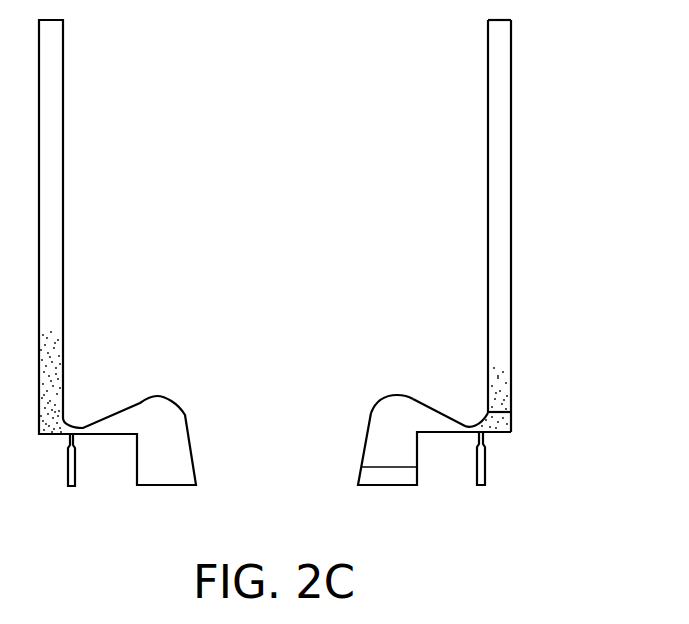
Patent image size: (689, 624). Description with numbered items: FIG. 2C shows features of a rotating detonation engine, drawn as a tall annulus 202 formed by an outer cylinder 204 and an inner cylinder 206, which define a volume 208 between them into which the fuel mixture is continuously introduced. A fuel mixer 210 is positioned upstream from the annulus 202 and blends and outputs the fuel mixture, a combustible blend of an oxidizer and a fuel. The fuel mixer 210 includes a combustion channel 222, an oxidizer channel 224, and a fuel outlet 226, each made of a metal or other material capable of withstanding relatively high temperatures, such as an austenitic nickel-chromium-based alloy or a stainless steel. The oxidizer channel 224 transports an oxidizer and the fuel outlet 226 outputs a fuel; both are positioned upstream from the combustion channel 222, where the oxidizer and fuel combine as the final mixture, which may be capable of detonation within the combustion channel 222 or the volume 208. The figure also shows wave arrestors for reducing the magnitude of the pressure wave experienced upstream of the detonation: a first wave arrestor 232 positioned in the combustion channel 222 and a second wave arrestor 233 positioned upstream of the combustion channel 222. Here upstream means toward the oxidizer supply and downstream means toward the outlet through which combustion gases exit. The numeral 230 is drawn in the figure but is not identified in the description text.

The annulus 202 is at (505, 226).
The outer cylinder 204 is at (512, 245).
The inner cylinder 206 is at (488, 233).
The volume 208 is at (503, 303).
The fuel mixer 210 is at (454, 462).
The combustion channel 222 is at (498, 430).
The oxidizer channel 224 is at (380, 412).
The fuel outlet 226 is at (486, 468).
The sloped channel 230 is at (462, 418).
The wave arrestor 232 is at (498, 410).
The second wave arrestor 233 is at (380, 466).